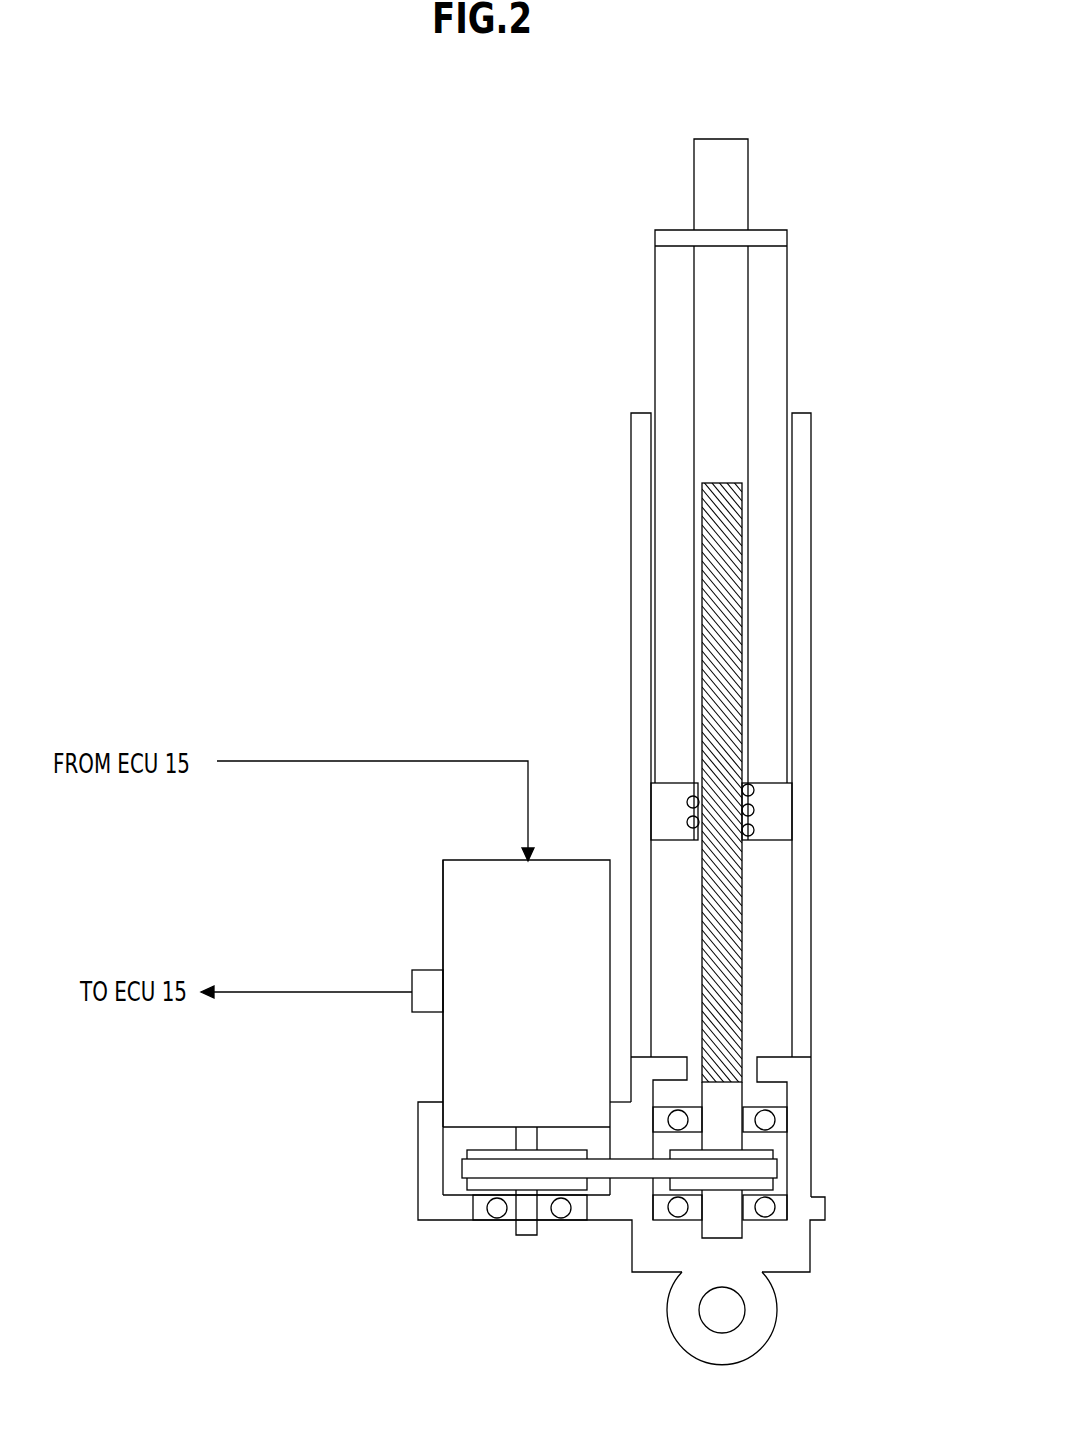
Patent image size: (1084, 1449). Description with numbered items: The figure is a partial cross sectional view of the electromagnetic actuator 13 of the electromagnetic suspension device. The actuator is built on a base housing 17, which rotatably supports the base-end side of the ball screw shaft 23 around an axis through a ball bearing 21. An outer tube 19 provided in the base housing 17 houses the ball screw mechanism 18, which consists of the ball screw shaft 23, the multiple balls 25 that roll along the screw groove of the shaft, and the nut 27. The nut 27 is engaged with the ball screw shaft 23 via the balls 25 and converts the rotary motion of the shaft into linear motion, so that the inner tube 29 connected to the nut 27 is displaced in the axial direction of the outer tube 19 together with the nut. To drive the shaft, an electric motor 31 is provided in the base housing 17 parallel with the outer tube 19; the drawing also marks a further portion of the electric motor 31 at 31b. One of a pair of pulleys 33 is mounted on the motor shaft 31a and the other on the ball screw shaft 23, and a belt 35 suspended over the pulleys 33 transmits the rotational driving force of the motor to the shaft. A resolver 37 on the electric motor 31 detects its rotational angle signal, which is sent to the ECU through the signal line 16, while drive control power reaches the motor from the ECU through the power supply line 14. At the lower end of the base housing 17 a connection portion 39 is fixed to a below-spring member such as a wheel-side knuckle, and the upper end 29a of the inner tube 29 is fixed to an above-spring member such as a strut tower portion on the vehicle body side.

The electromagnetic actuator 13 is at (842, 248).
The power supply line 14 is at (350, 760).
The signal line 16 is at (302, 990).
The base housing 17 is at (797, 1155).
The ball screw mechanism 18 is at (888, 705).
The outer tube 19 is at (800, 465).
The ball bearing 21 is at (767, 1120).
The ball screw shaft 23 is at (733, 893).
The balls 25 is at (755, 830).
The nut 27 is at (673, 795).
The inner tube 29 is at (770, 326).
The upper end of the inner tube 29a is at (732, 184).
The electric motor 31 is at (557, 882).
The motor shaft 31a is at (527, 1234).
The motor body 31b is at (460, 892).
The pulleys 33 is at (465, 1182).
The belt 35 is at (627, 1170).
The resolver 37 is at (430, 982).
The connection portion 39 is at (762, 1312).